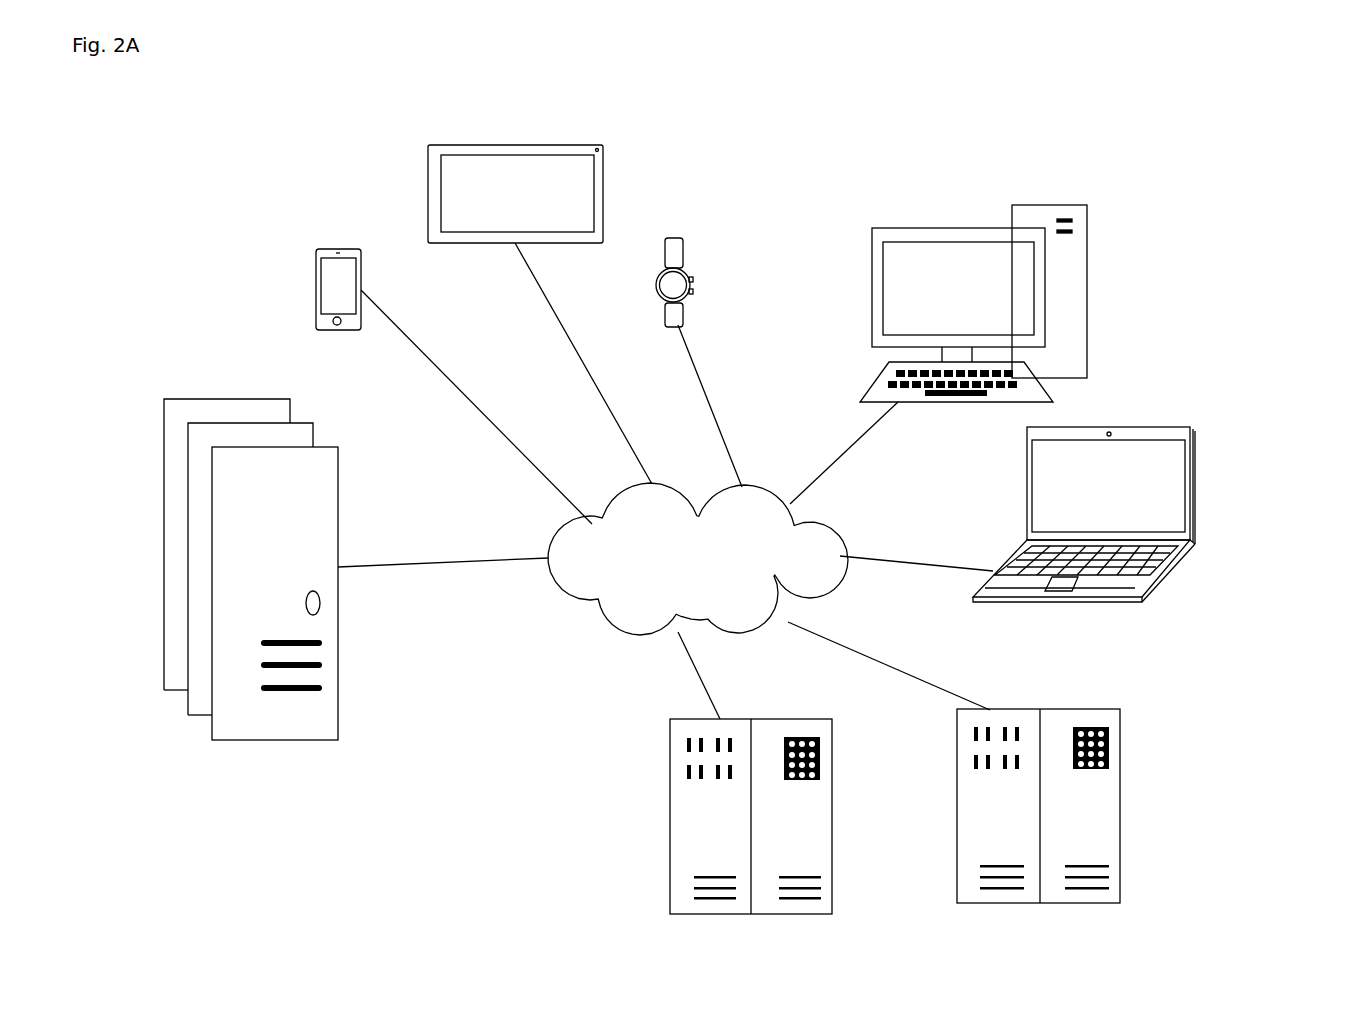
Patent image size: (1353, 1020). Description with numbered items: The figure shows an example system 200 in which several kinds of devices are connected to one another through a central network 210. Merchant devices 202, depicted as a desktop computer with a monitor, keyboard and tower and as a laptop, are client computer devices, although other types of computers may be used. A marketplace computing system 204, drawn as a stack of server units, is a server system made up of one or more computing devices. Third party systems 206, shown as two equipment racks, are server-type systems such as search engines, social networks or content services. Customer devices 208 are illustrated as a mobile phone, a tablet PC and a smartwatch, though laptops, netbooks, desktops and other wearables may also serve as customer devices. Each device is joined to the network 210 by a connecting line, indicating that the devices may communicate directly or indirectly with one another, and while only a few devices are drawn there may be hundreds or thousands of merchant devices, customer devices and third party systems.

The system 200 is at (167, 108).
The merchant devices 202 is at (1283, 495).
The marketplace computing system 204 is at (338, 662).
The third party systems 206 is at (670, 851).
The customer devices 208 is at (316, 278).
The network 210 is at (610, 617).